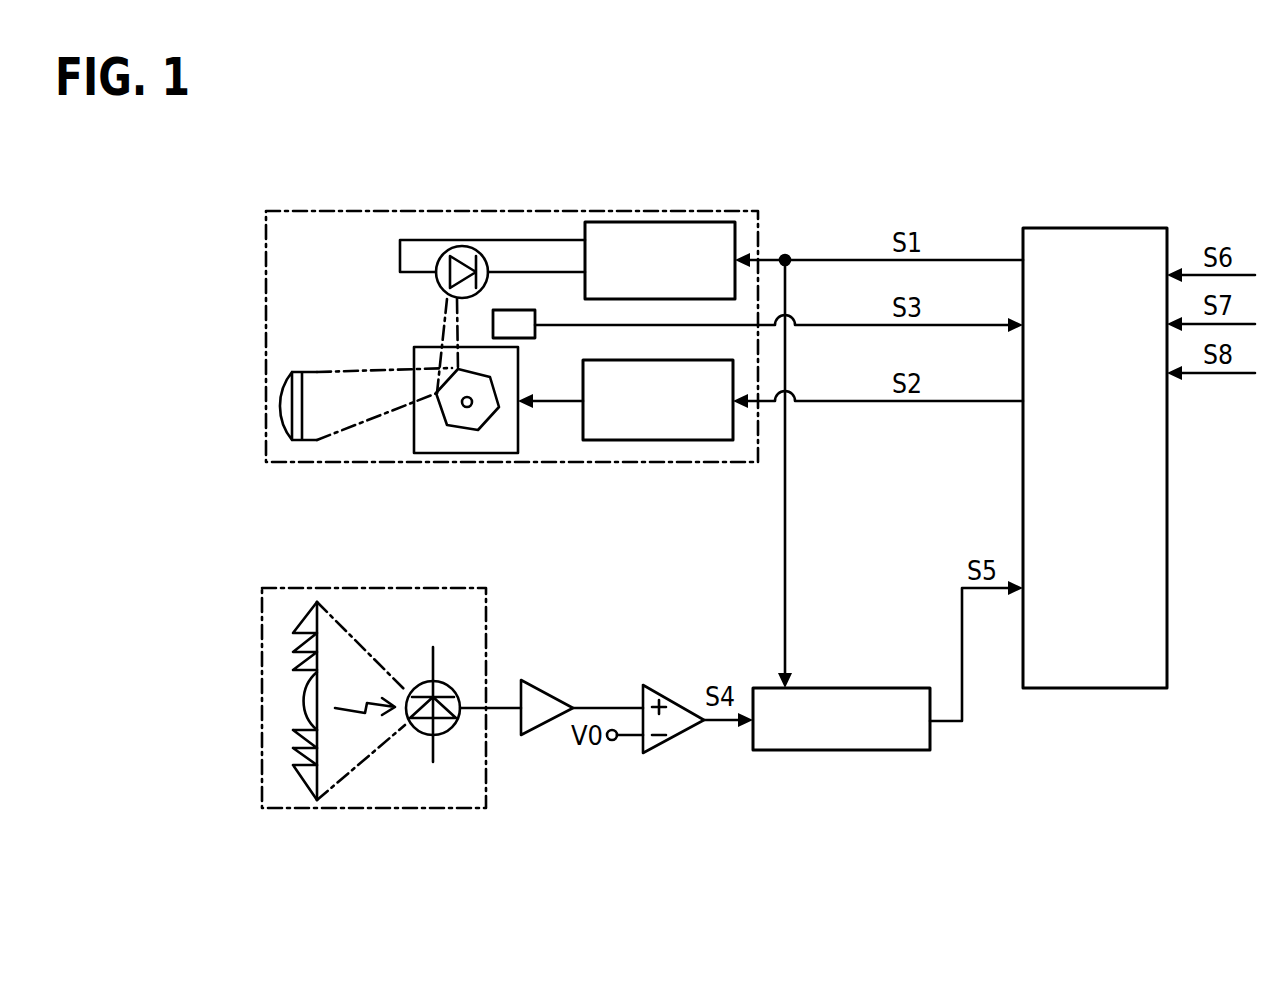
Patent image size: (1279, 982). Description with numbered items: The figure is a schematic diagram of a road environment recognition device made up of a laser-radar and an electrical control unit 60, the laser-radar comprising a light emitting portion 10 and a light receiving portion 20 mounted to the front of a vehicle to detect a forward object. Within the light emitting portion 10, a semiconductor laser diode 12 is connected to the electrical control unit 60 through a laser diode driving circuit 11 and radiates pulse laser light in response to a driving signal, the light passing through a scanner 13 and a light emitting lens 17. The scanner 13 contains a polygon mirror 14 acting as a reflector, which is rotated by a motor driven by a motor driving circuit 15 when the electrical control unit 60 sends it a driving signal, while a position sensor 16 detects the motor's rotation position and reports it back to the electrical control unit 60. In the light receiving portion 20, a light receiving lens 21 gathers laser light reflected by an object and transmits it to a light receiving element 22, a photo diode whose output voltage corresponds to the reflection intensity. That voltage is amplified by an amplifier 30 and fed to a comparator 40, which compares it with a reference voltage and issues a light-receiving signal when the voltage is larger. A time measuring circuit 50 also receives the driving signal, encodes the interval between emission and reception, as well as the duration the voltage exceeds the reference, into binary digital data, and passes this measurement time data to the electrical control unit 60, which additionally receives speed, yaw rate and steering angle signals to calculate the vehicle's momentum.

The light emitting portion 10 is at (303, 210).
The laser diode driving circuit 11 is at (635, 222).
The semiconductor laser diode 12 is at (440, 296).
The scanner 13 is at (453, 455).
The polygon mirror 14 is at (487, 430).
The motor driving circuit 15 is at (648, 360).
The position sensor 16 is at (536, 338).
The light emitting lens 17 is at (282, 380).
The light receiving portion 20 is at (403, 588).
The light receiving lens 21 is at (297, 612).
The light receiving element 22 is at (455, 688).
The amplifier 30 is at (548, 690).
The comparator 40 is at (670, 693).
The time measuring circuit 50 is at (860, 688).
The electrical control unit 60 is at (1100, 228).